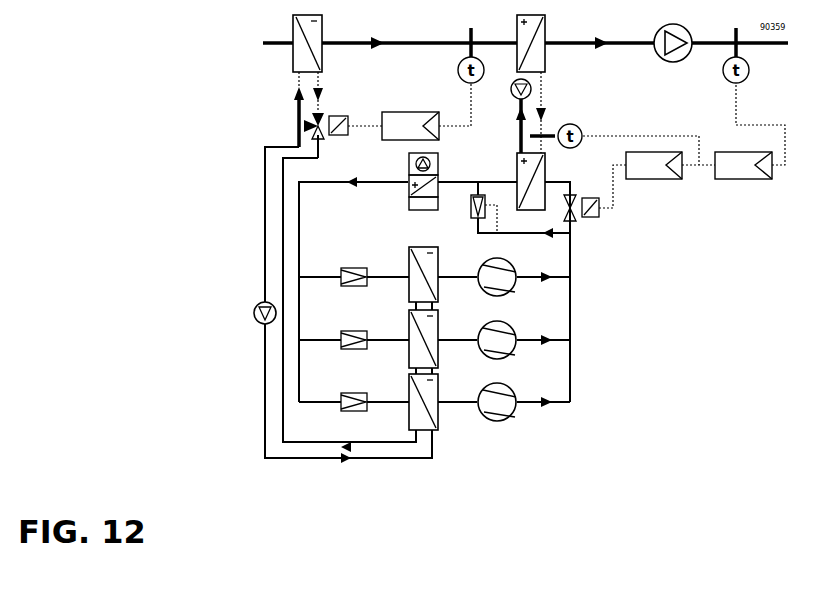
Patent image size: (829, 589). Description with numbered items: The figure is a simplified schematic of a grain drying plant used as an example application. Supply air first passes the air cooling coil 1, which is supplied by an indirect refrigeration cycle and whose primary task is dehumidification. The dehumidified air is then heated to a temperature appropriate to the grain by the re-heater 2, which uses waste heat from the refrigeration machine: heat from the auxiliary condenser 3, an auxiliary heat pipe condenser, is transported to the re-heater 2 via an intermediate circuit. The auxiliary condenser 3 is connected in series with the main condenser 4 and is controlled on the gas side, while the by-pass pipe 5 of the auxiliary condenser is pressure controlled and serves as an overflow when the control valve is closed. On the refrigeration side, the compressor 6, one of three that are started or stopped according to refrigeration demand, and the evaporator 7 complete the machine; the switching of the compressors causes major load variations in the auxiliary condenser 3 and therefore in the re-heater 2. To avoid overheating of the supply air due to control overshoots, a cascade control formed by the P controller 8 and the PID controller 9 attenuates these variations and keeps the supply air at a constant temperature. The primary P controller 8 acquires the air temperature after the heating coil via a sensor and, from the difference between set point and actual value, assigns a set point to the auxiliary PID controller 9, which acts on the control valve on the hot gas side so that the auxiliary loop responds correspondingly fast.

The air cooling coil 1 is at (314, 43).
The re-heater 2 is at (537, 43).
The auxiliary condenser 3 is at (537, 181).
The main condenser 4 is at (423, 189).
The by-pass pipe 5 is at (470, 206).
The compressor 6 is at (497, 348).
The evaporator 7 is at (423, 331).
The P controller 8 is at (743, 174).
The PID controller 9 is at (654, 174).